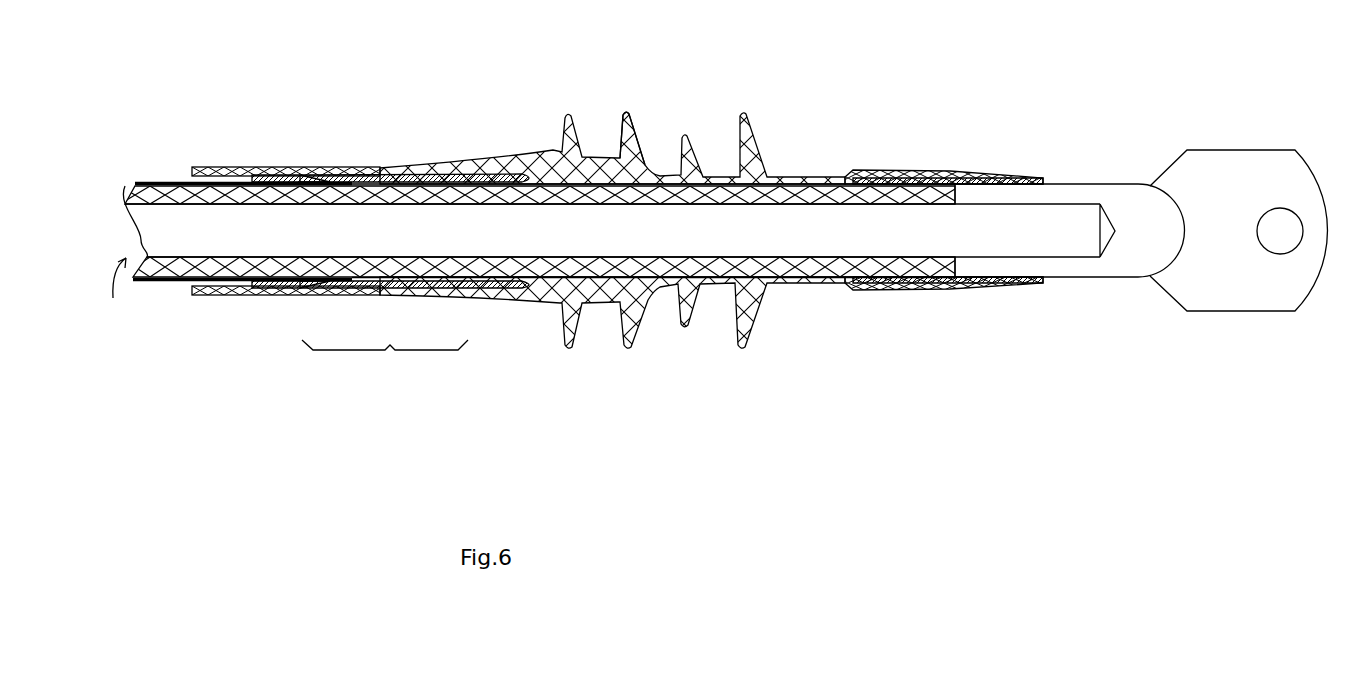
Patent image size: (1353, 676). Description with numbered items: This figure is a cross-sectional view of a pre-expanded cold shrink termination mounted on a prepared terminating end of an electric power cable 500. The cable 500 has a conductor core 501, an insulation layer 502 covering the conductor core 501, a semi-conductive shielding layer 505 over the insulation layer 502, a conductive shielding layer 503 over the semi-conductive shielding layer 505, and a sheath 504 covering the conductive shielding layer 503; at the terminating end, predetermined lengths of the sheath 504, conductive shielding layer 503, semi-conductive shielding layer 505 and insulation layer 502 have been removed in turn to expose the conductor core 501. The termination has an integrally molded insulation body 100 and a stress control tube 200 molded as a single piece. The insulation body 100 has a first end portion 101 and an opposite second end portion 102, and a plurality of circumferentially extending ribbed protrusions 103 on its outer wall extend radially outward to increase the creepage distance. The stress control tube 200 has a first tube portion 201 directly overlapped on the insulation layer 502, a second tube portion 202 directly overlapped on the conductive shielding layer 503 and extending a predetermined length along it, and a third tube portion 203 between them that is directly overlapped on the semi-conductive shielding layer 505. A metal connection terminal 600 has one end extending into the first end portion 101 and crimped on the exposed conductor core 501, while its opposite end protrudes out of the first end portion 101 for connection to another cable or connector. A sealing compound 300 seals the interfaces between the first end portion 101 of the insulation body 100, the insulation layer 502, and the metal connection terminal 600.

The insulation body 100 is at (550, 160).
The first end portion 101 is at (907, 172).
The second end portion 102 is at (251, 170).
The ribbed protrusions 103 is at (630, 122).
The stress control tube 200 is at (385, 359).
The first tube portion 201 is at (470, 290).
The second tube portion 202 is at (297, 290).
The third tube portion 203 is at (383, 290).
The sealing compound 300 is at (960, 290).
The electric power cable 500 is at (129, 262).
The conductor core 501 is at (1038, 235).
The insulation layer 502 is at (800, 268).
The conductive shielding layer 503 is at (293, 172).
The sheath 504 is at (166, 285).
The semi-conductive shielding layer 505 is at (387, 173).
The metal connection terminal 600 is at (1113, 195).